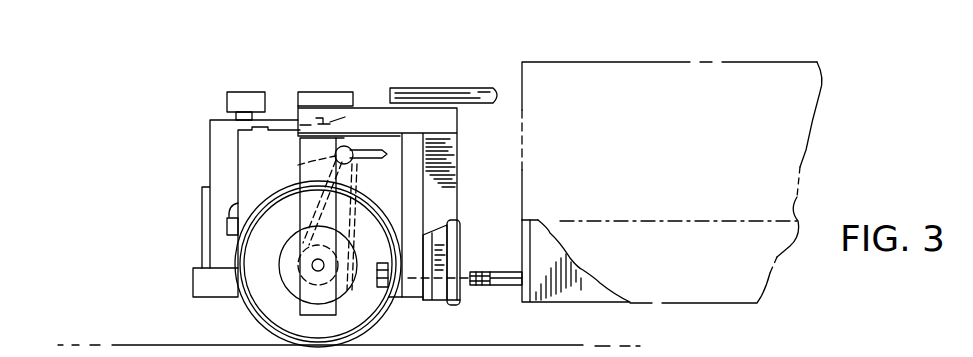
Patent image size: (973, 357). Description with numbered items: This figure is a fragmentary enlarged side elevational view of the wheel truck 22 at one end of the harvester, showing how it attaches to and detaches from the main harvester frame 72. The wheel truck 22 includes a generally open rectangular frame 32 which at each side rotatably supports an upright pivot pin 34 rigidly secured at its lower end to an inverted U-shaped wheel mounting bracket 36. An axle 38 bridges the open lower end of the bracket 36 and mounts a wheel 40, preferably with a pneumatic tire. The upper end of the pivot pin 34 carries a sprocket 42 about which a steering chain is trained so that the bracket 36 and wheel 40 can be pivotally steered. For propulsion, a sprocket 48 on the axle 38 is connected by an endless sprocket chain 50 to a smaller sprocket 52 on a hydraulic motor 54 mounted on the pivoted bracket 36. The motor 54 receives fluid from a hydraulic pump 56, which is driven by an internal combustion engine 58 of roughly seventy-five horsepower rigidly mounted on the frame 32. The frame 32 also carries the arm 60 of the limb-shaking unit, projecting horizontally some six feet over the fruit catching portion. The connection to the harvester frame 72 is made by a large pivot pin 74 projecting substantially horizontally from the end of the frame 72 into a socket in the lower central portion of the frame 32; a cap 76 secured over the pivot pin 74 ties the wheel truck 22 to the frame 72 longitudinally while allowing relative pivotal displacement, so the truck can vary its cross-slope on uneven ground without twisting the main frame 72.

The wheel truck 22 is at (372, 80).
The frame 32 is at (316, 108).
The pivot pin 34 is at (308, 136).
The wheel mounting bracket 36 is at (330, 302).
The axle 38 is at (312, 267).
The wheel 40 is at (258, 316).
The sprocket 42 is at (344, 123).
The sprocket 48 is at (280, 258).
The sprocket chain 50 is at (354, 177).
The sprocket 52 is at (310, 162).
The hydraulic motor 54 is at (350, 147).
The hydraulic pump 56 is at (224, 230).
The internal combustion engine 58 is at (210, 157).
The arm 60 is at (453, 95).
The harvester frame 72 is at (590, 297).
The pivot pin 74 is at (495, 272).
The cap 76 is at (394, 296).